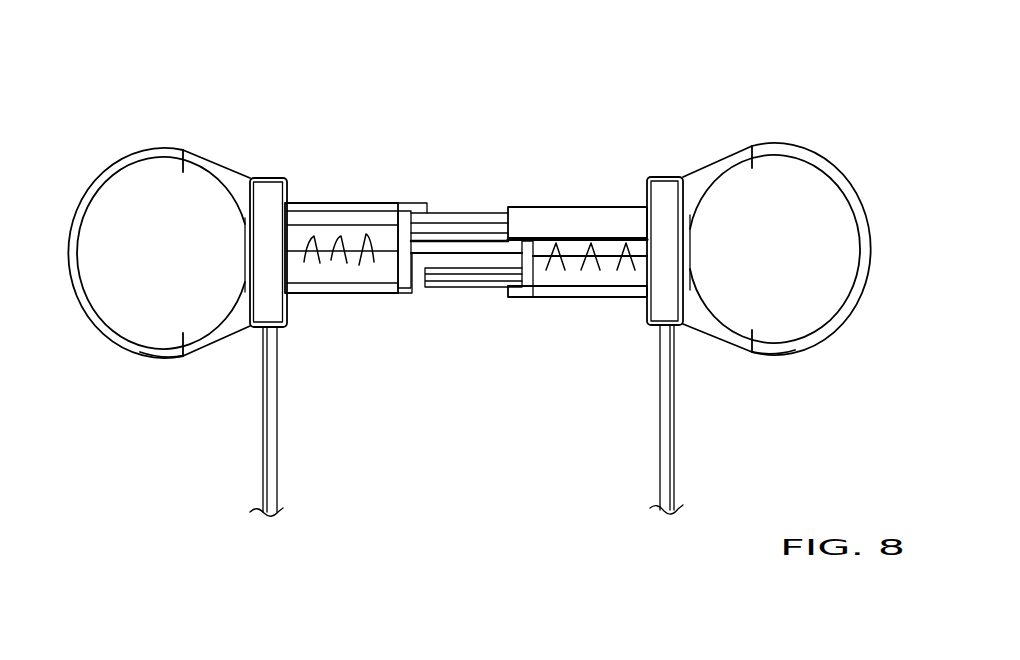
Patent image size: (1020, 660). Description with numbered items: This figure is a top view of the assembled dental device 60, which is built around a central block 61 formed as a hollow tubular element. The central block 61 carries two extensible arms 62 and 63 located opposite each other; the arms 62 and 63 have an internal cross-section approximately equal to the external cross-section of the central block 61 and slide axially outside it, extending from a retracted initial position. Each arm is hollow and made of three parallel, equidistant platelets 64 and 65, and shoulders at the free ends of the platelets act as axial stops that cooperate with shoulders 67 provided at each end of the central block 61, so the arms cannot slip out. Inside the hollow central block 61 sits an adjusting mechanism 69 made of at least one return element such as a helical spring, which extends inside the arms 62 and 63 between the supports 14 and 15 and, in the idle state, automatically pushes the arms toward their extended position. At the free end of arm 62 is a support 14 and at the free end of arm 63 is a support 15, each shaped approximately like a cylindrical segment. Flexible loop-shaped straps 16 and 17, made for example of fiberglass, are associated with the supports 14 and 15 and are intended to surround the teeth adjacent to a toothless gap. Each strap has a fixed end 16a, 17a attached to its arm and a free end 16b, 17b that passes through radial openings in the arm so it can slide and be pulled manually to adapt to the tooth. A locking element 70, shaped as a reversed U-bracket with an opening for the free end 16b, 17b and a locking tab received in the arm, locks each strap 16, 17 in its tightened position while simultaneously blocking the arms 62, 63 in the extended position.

The support 14 is at (208, 165).
The support 15 is at (718, 167).
The strap 16 is at (157, 150).
The fixed end 16a is at (213, 348).
The free end 16b is at (267, 447).
The strap 17 is at (833, 168).
The fixed end 17a is at (720, 343).
The free end 17b is at (660, 402).
The dental device 60 is at (532, 134).
The central block 61 is at (468, 209).
The extensible arm 62 is at (367, 201).
The extensible arm 63 is at (595, 207).
The platelet 64 is at (373, 294).
The platelet 65 is at (620, 297).
The shoulder 67 is at (520, 262).
The adjusting mechanism 69 is at (313, 237).
The locking element 70 is at (285, 177).